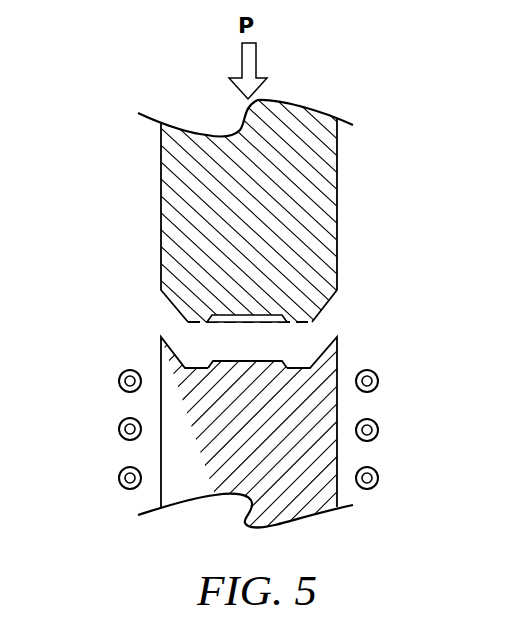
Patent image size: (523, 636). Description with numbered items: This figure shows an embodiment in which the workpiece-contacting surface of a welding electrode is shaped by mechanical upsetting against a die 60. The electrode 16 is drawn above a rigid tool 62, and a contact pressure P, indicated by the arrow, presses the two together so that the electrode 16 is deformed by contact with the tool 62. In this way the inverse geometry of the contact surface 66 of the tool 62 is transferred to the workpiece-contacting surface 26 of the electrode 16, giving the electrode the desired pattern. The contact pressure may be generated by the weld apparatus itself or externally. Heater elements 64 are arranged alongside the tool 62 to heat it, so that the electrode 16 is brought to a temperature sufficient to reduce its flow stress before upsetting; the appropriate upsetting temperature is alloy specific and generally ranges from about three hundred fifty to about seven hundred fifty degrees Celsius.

The electrode 16 is at (261, 214).
The workpiece-contacting surface 26 is at (258, 322).
The die 60 is at (261, 420).
The rigid tool 62 is at (337, 421).
The heater elements 64 is at (120, 428).
The contact surface 66 is at (246, 359).